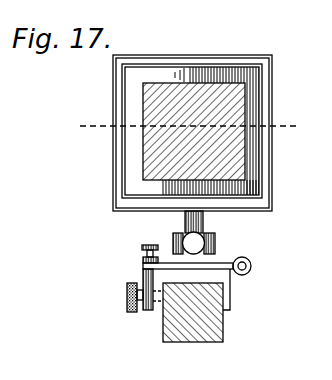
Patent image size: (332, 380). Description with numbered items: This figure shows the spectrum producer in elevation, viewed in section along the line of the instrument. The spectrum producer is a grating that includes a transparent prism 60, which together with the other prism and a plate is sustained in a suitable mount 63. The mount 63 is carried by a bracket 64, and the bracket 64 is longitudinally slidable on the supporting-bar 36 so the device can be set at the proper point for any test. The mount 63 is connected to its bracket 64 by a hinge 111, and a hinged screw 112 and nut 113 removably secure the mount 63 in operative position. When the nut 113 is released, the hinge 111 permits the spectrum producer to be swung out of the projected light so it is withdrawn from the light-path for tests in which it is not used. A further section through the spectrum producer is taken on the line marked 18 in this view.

The section line 18— 18 is at (189, 127).
The supporting-bar 36 is at (191, 340).
The transparent prism 60 is at (196, 144).
The mount 63 is at (272, 183).
The bracket 64 is at (184, 277).
The hinge 111 is at (251, 266).
The hinged screw 112 is at (150, 244).
The nut 113 is at (142, 254).